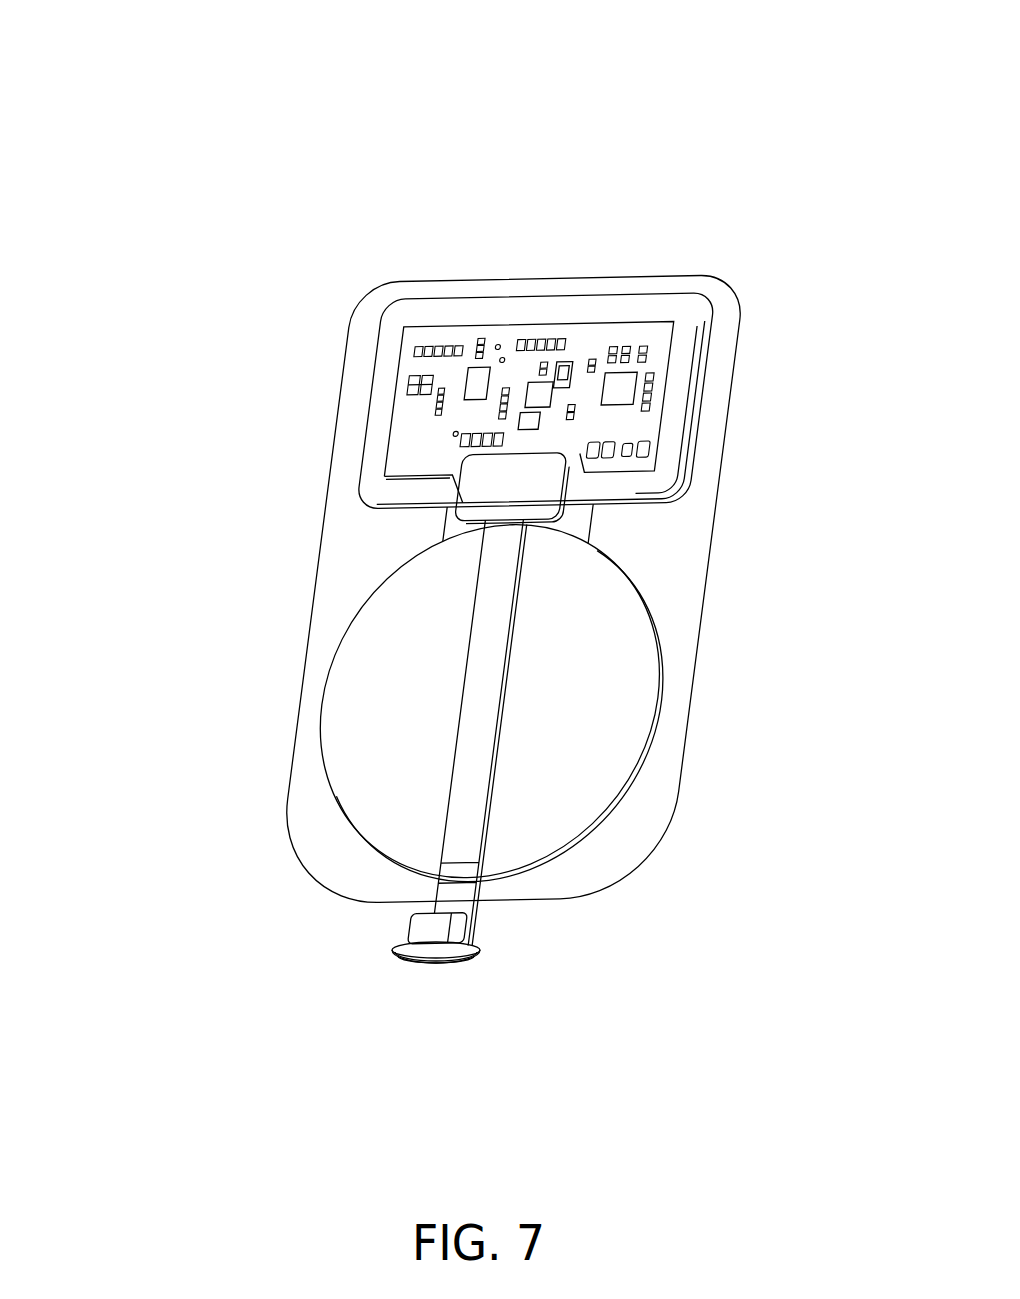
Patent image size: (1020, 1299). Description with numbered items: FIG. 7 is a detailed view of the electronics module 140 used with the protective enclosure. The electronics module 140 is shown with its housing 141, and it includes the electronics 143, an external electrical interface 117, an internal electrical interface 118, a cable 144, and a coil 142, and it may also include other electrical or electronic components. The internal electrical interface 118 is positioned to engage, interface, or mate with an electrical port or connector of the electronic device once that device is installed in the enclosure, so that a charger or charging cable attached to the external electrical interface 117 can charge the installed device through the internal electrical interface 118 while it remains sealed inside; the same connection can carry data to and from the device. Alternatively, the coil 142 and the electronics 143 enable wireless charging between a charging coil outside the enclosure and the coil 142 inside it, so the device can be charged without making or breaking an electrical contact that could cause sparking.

The electronics module 140 is at (629, 103).
The housing 141 is at (707, 578).
The coil 142 is at (626, 680).
The electronics 143 is at (640, 422).
The cable 144 is at (452, 737).
The internal electrical interface 118 is at (450, 908).
The external electrical interface 117 is at (452, 968).